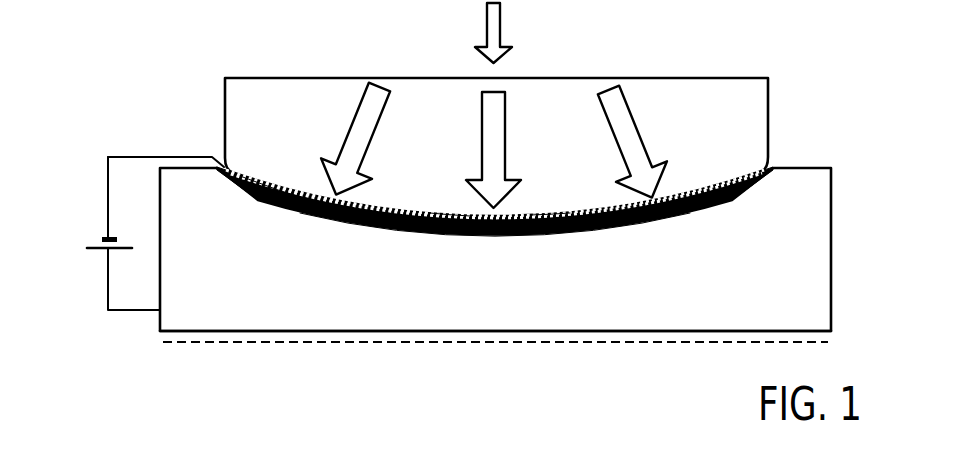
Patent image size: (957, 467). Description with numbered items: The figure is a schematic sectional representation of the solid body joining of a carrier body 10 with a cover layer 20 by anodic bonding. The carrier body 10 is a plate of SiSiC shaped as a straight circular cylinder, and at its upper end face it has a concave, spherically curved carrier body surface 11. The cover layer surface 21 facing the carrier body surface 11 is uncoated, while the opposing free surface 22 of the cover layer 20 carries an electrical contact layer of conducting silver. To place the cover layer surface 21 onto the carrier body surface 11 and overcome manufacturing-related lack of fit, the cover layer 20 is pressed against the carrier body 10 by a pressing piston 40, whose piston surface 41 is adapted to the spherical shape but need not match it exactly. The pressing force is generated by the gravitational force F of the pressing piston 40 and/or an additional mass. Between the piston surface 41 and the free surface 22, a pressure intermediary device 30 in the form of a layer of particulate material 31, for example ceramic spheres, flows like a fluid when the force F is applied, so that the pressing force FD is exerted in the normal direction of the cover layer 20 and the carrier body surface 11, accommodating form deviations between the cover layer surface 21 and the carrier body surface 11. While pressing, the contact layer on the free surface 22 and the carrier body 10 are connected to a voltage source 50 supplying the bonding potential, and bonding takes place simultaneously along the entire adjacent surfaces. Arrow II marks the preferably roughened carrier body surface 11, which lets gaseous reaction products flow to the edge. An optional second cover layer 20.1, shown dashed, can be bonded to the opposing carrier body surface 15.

The carrier body 10 is at (262, 321).
The carrier body surface 11 is at (585, 234).
The opposing carrier body surface 15 is at (456, 333).
The cover layer 20 is at (775, 166).
The second cover layer 20.1 is at (624, 335).
The cover layer surface 21 is at (495, 224).
The free surface 22 is at (312, 202).
The pressure intermediary device 30 is at (769, 165).
The particulate material 31 is at (452, 216).
The pressing piston 40 is at (242, 107).
The piston surface 41 is at (545, 213).
The voltage source 50 is at (80, 255).
The gravitational force F is at (503, 33).
The pressing force FD is at (494, 142).
The arrow II is at (738, 210).